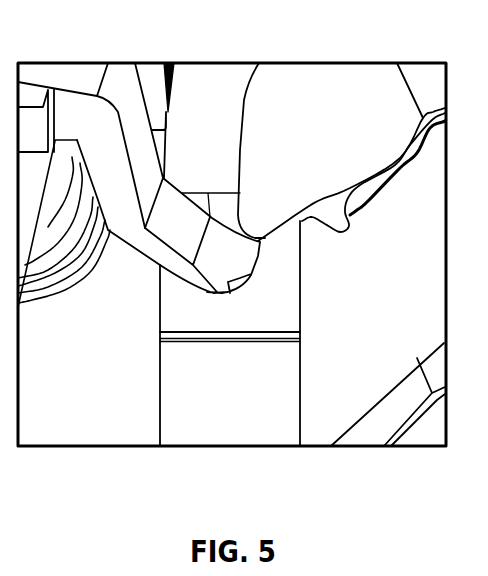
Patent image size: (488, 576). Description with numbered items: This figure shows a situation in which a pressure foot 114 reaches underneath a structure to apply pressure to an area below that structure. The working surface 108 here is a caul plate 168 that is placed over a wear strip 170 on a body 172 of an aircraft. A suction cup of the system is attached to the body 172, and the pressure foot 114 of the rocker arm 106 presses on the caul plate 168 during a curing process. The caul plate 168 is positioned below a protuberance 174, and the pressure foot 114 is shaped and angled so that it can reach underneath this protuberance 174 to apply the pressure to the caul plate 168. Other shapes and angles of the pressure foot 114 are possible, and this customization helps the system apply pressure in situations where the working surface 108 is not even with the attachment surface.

The rocker arm 106 is at (113, 80).
The pressure foot 114 is at (225, 232).
The protuberance 174 is at (279, 140).
The working surface 108 is at (290, 323).
The body 172 is at (72, 325).
The caul plate 168 is at (173, 303).
The wear strip 170 is at (264, 423).